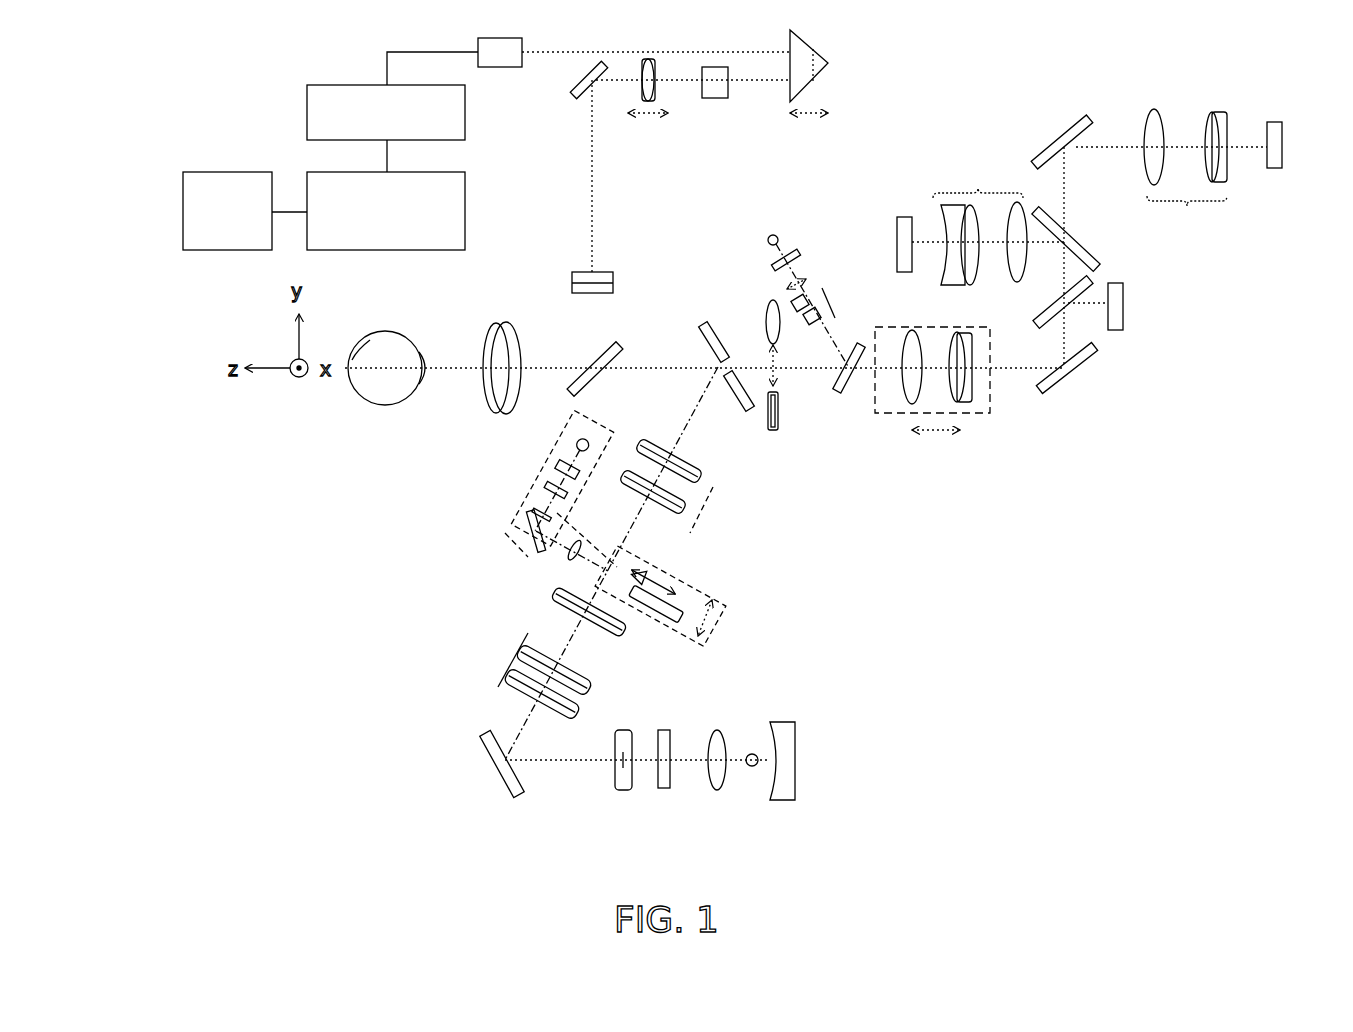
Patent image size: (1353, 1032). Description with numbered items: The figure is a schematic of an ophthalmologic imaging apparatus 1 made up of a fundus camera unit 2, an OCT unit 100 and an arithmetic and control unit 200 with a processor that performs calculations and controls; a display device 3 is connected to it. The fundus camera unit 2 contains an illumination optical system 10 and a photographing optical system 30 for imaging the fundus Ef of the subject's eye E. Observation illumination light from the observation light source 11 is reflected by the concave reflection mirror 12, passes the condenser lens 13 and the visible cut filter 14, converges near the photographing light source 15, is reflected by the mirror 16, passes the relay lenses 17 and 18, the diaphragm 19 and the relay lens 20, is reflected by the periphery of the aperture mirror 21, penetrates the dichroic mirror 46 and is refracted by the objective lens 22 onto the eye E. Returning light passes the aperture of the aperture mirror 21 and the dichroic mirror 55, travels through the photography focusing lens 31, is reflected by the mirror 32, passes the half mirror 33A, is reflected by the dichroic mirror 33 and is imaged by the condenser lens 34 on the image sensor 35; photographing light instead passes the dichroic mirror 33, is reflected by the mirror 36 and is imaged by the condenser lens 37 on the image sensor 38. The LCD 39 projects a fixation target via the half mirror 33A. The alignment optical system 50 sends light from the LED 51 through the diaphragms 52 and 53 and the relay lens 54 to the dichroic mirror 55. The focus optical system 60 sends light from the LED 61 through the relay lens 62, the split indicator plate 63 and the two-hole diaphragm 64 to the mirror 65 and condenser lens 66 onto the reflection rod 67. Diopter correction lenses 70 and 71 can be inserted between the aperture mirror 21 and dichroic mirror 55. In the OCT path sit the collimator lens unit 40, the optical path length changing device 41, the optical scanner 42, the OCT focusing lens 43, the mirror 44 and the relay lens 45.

The ophthalmologic imaging apparatus 1 is at (1208, 38).
The fundus camera unit 2 is at (1233, 369).
The display device 3 is at (218, 251).
The illumination optical system 10 is at (686, 737).
The observation light source 11 is at (752, 752).
The reflection mirror 12 is at (797, 772).
The condenser lens 13 is at (722, 790).
The visible cut filter 14 is at (665, 790).
The photographing light source 15 is at (625, 790).
The mirror 16 is at (522, 795).
The relay lens 17 is at (503, 671).
The relay lens 18 is at (542, 671).
The diaphragm 19 is at (625, 633).
The relay lens 20 is at (718, 520).
The aperture mirror 21 is at (738, 402).
The objective lens 22 is at (500, 321).
The photographing optical system 30 is at (1081, 317).
The photography focusing lens 31 is at (990, 413).
The mirror 32 is at (1049, 395).
The dichroic mirror 33 is at (1078, 235).
The half mirror 33A is at (1046, 311).
The condenser lens 34 is at (977, 186).
The image sensor 35 is at (903, 217).
The mirror 36 is at (1062, 128).
The condenser lens 37 is at (1187, 209).
The image sensor 38 is at (1270, 121).
The LCD 39 is at (1117, 332).
The collimator lens unit 40 is at (495, 67).
The optical path length changing device 41 is at (830, 59).
The optical scanner 42 is at (728, 90).
The OCT focusing lens 43 is at (653, 100).
The mirror 44 is at (573, 95).
The relay lens 45 is at (573, 271).
The dichroic mirror 46 is at (618, 345).
The alignment optical system 50 is at (785, 243).
The LED 51 is at (768, 239).
The diaphragm 52 is at (771, 260).
The diaphragm 53 is at (805, 285).
The relay lens 54 is at (835, 294).
The dichroic mirror 55 is at (849, 397).
The focus optical system 60 is at (554, 497).
The LED 61 is at (583, 445).
The relay lens 62 is at (567, 470).
The split indicator plate 63 is at (556, 489).
The two-hole diaphragm 64 is at (541, 514).
The mirror 65 is at (536, 531).
The condenser lens 66 is at (575, 550).
The reflection rod 67 is at (688, 590).
The diopter correction lens 70 is at (767, 324).
The diopter correction lens 71 is at (776, 431).
The OCT unit 100 is at (307, 113).
The arithmetic and control unit 200 is at (467, 212).
The subject's eye E is at (408, 334).
The fundus Ef is at (367, 337).